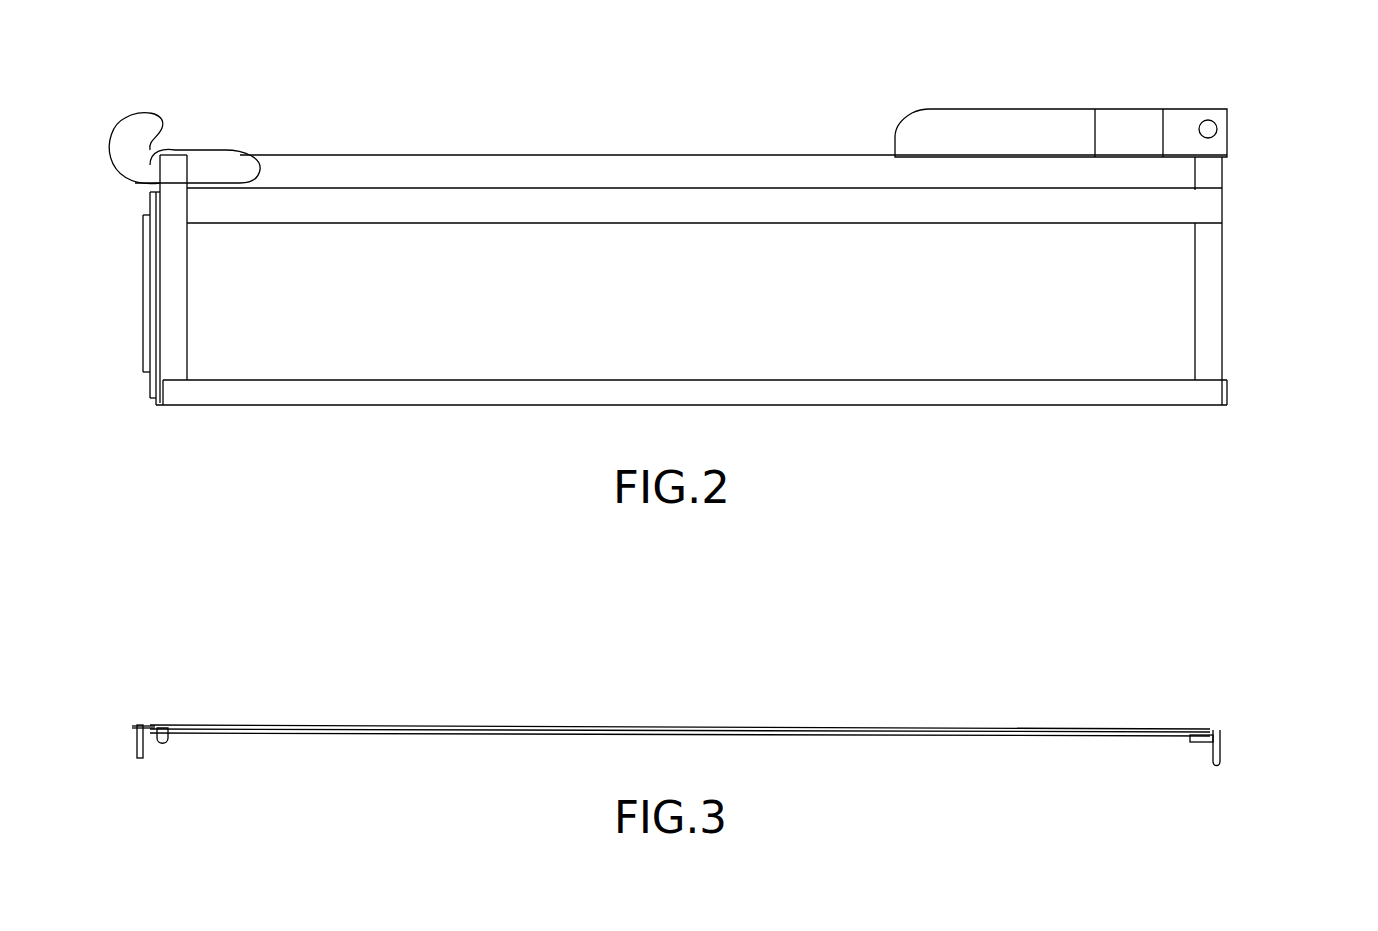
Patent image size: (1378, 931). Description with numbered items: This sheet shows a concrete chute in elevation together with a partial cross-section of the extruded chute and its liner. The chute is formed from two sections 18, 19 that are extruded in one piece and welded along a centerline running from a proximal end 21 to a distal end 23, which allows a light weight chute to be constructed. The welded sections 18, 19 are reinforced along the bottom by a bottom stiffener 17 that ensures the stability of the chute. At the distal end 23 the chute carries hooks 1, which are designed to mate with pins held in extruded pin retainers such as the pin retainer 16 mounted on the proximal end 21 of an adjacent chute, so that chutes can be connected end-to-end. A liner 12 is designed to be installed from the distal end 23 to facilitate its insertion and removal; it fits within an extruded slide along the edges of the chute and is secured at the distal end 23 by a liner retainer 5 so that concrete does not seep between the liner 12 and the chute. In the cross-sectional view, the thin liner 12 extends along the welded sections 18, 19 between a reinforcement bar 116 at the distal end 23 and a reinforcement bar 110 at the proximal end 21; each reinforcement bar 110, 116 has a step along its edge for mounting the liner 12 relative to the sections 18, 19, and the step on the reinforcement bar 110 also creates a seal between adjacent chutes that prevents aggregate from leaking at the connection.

In FIG. 2, the hooks 1 is at (130, 140).
In FIG. 2, the liner 12 is at (850, 308).
In FIG. 3, the liner 12 is at (680, 738).
In FIG. 2, the extruded pin retainer 16 is at (1082, 115).
In FIG. 2, the bottom stiffener 17 is at (437, 393).
In FIG. 2, the proximal end 21 is at (1222, 306).
In FIG. 2, the distal end 23 is at (143, 296).
In FIG. 3, the liner retainer 5 is at (134, 739).
In FIG. 3, the section 18 is at (680, 768).
In FIG. 3, the section 19 is at (808, 733).
In FIG. 3, the reinforcement bar 110 is at (1222, 740).
In FIG. 3, the reinforcement bar 116 is at (146, 758).